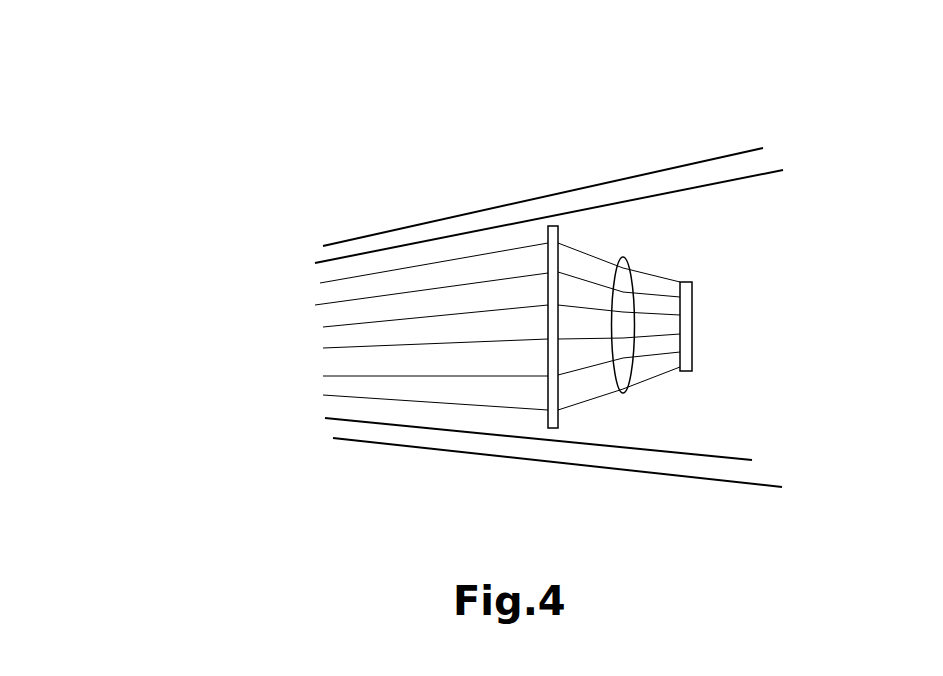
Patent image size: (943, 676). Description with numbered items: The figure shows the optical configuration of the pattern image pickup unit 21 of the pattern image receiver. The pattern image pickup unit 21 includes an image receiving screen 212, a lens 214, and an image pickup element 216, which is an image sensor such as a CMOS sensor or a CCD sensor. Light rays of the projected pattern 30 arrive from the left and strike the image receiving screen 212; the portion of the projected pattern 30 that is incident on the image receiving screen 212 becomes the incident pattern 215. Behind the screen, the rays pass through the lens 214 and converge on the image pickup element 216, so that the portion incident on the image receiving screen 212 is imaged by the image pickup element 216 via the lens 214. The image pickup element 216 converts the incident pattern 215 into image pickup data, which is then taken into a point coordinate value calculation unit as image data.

The pattern image pickup unit 21 is at (160, 84).
The projected pattern 30 is at (362, 383).
The image receiving screen 212 is at (553, 226).
The lens 214 is at (623, 373).
The incident pattern 215 is at (662, 327).
The image pickup element 216 is at (685, 284).